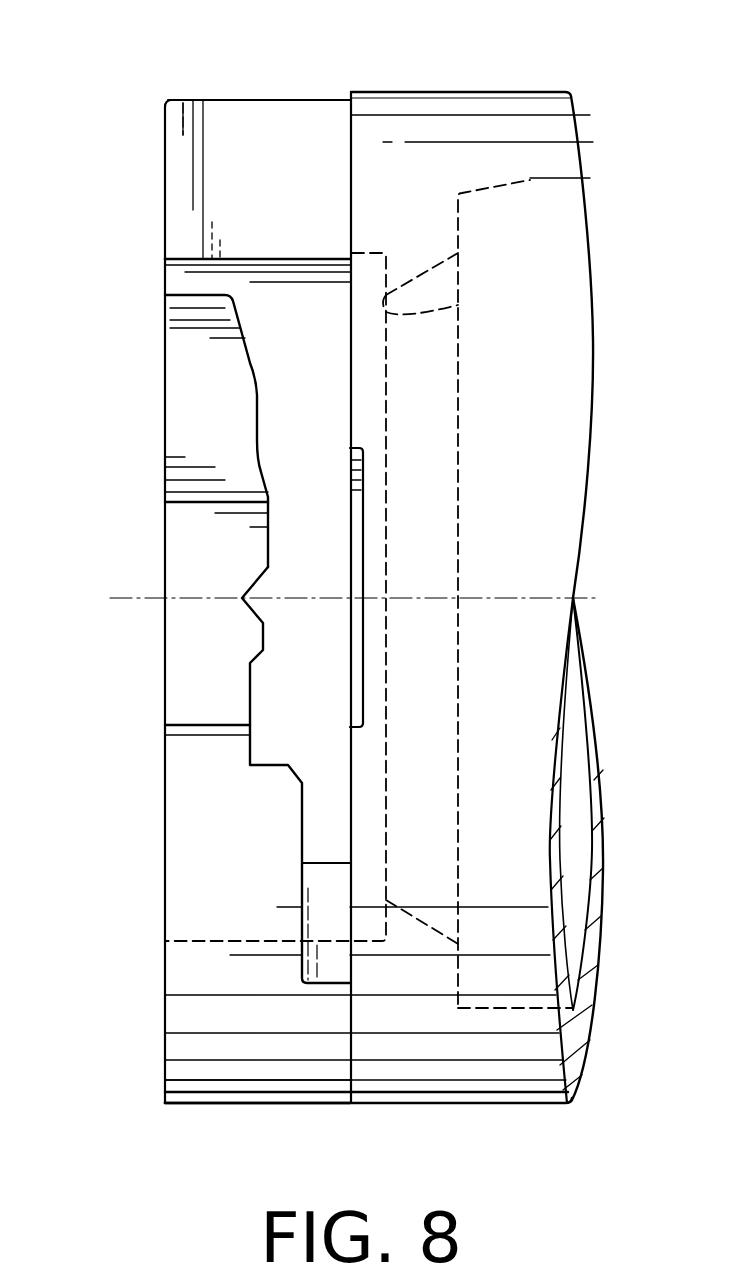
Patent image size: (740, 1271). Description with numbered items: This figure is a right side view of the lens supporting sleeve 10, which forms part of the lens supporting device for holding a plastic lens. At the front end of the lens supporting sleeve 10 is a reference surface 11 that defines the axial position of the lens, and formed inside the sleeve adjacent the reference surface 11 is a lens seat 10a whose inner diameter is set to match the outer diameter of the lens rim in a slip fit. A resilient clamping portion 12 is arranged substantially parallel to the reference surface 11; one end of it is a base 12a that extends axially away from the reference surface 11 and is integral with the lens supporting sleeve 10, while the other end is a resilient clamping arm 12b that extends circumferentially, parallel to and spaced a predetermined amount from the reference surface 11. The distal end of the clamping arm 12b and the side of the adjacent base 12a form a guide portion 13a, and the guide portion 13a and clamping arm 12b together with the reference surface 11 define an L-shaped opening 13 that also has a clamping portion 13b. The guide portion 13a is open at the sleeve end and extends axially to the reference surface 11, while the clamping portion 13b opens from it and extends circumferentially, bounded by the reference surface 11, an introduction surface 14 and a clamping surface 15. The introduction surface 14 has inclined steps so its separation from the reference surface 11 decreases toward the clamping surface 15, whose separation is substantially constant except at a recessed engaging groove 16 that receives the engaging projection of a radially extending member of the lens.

The lens supporting sleeve 10 is at (551, 80).
The lens seat 10a is at (460, 306).
The reference surface 11 is at (349, 142).
The resilient clamping portion 12 is at (97, 705).
The base 12a is at (237, 117).
The resilient clamping arm 12b is at (197, 662).
The L-shaped opening 13 is at (97, 112).
The guide portion 13a is at (204, 179).
The clamping portion 13b is at (291, 568).
The introduction surface 14 is at (240, 365).
The clamping surface 15 is at (270, 540).
The recessed engaging groove 16 is at (262, 614).